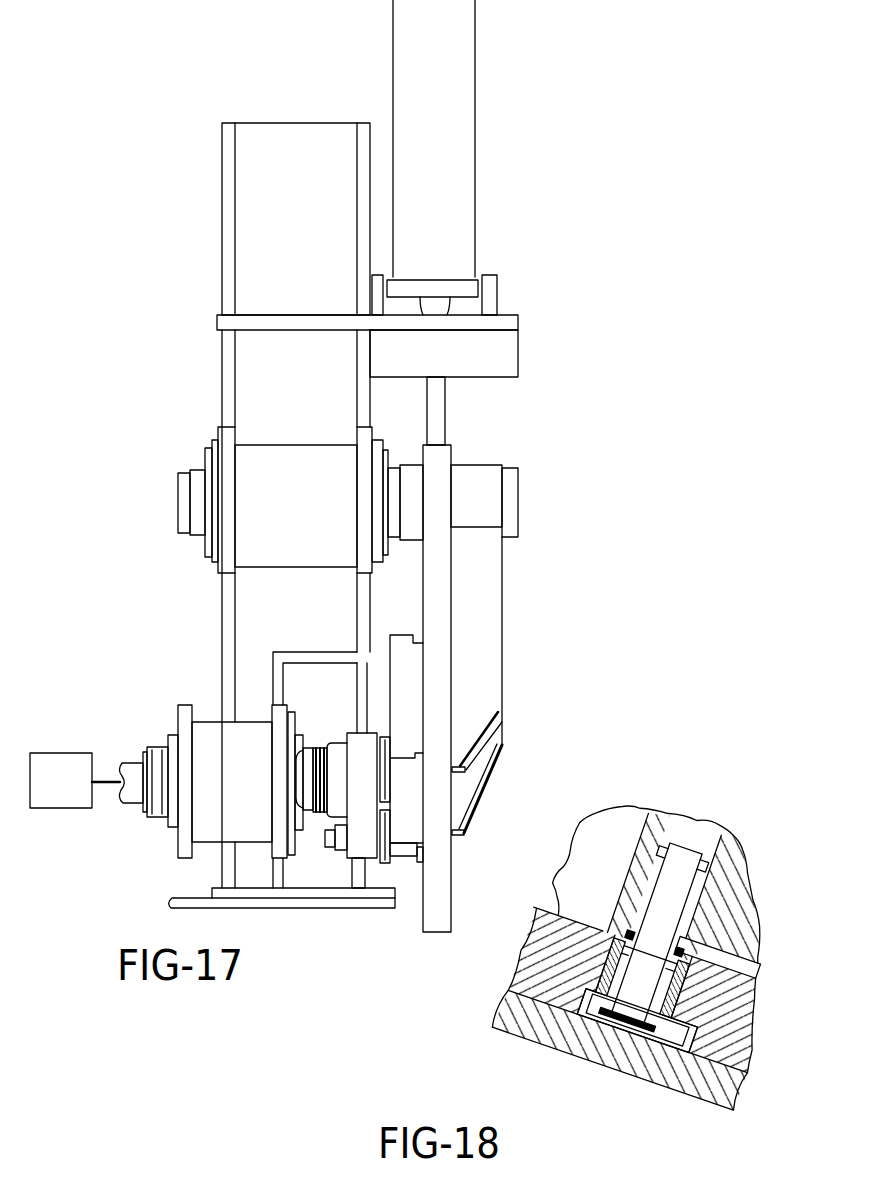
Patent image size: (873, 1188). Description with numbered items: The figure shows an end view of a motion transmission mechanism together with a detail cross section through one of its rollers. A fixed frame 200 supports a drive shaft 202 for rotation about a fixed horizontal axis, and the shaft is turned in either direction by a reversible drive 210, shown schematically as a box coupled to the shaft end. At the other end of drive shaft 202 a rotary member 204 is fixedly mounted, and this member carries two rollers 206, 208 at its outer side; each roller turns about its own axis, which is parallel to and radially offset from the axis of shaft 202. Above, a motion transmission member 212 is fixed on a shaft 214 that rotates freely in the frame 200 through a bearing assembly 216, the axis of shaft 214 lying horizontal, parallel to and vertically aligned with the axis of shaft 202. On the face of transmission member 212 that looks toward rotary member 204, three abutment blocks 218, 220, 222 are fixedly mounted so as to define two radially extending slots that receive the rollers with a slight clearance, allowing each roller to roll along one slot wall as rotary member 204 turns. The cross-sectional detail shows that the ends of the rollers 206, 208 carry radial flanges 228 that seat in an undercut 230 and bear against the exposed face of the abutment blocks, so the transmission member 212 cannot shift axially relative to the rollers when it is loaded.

In FIG. 17, the fixed frame 200 is at (220, 641).
In FIG. 17, the drive shaft 202 is at (134, 768).
In FIG. 17, the rotary member 204 is at (355, 745).
In FIG. 18, the rotary member 204 is at (640, 857).
In FIG. 17, the roller 206 is at (386, 738).
In FIG. 18, the roller 206 is at (618, 978).
In FIG. 17, the roller 208 is at (406, 860).
In FIG. 17, the reversible drive 210 is at (58, 770).
In FIG. 17, the motion transmission member 212 is at (440, 573).
In FIG. 18, the motion transmission member 212 is at (572, 1052).
In FIG. 17, the shaft 214 is at (198, 472).
In FIG. 17, the bearing assembly 216 is at (270, 452).
In FIG. 17, the abutment block 218 is at (414, 790).
In FIG. 18, the abutment block 218 is at (732, 1007).
In FIG. 17, the abutment block 220 is at (424, 846).
In FIG. 18, the abutment block 220 is at (558, 907).
In FIG. 17, the abutment block 222 is at (413, 665).
In FIG. 18, the radial flange 228 is at (600, 920).
In FIG. 18, the undercut 230 is at (693, 1032).